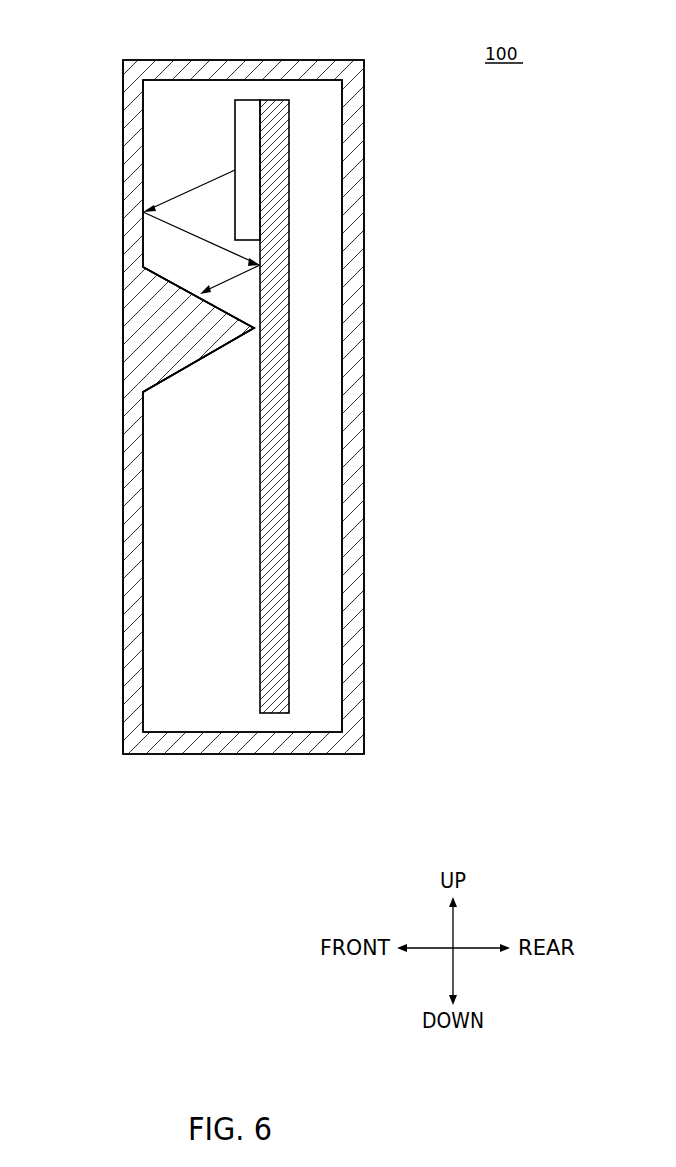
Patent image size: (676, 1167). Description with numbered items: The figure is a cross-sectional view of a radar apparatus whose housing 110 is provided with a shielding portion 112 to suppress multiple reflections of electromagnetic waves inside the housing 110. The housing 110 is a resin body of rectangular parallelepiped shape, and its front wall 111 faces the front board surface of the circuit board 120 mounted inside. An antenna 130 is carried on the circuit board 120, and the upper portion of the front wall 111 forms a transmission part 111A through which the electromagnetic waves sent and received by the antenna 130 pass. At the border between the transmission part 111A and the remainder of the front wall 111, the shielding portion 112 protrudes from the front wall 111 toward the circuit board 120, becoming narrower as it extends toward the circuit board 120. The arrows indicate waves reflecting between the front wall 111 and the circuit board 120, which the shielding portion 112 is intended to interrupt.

The housing 110 is at (382, 58).
The front wall 111 is at (123, 110).
The transmission part 111A is at (130, 148).
The shielding portion 112 is at (173, 333).
The circuit board 120 is at (284, 105).
The antenna 130 is at (247, 110).